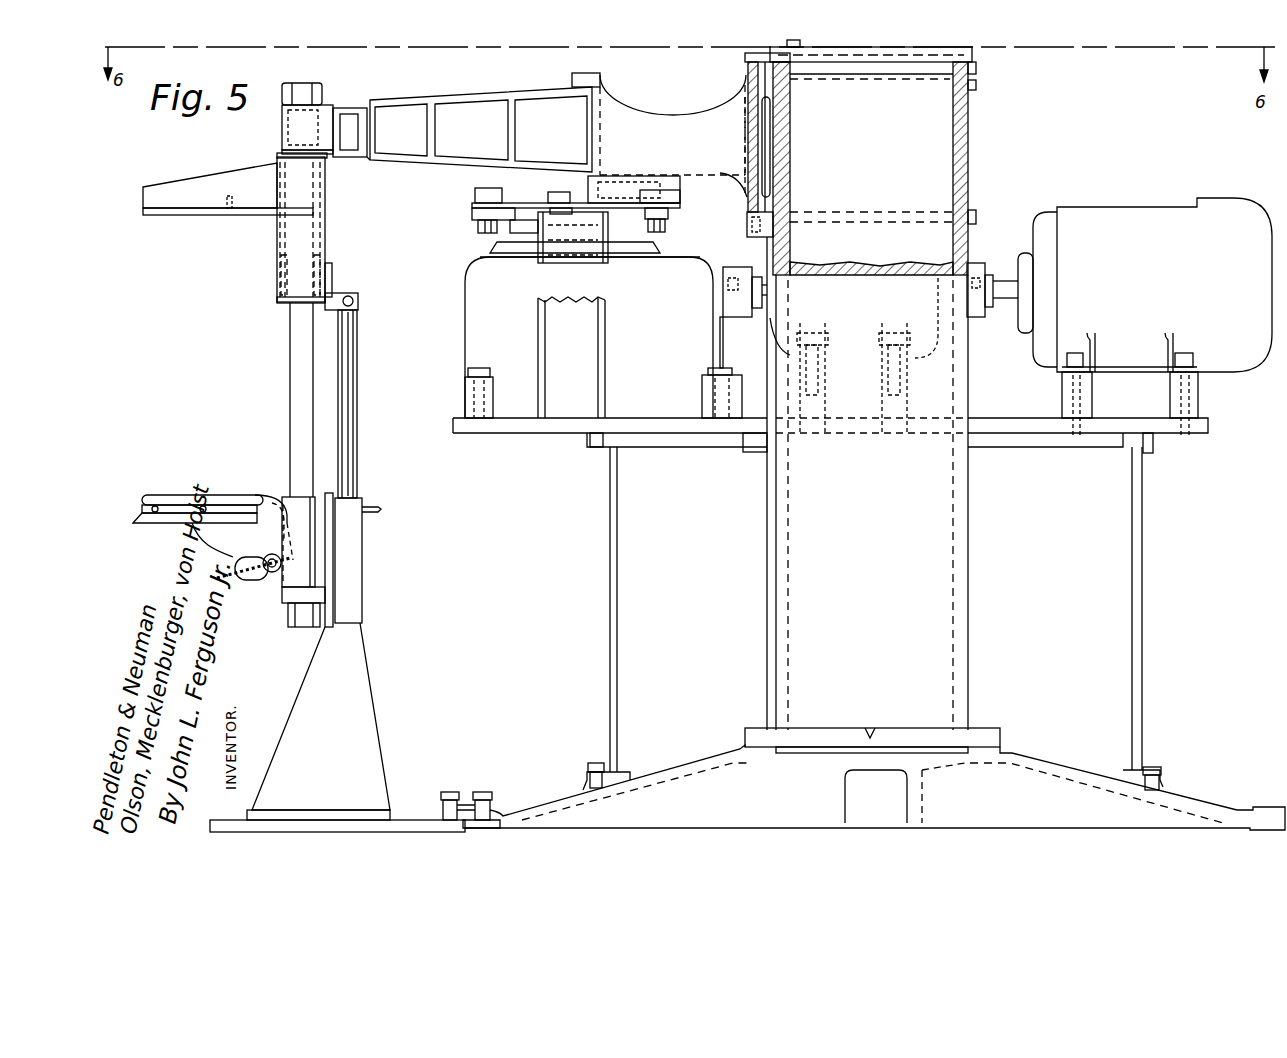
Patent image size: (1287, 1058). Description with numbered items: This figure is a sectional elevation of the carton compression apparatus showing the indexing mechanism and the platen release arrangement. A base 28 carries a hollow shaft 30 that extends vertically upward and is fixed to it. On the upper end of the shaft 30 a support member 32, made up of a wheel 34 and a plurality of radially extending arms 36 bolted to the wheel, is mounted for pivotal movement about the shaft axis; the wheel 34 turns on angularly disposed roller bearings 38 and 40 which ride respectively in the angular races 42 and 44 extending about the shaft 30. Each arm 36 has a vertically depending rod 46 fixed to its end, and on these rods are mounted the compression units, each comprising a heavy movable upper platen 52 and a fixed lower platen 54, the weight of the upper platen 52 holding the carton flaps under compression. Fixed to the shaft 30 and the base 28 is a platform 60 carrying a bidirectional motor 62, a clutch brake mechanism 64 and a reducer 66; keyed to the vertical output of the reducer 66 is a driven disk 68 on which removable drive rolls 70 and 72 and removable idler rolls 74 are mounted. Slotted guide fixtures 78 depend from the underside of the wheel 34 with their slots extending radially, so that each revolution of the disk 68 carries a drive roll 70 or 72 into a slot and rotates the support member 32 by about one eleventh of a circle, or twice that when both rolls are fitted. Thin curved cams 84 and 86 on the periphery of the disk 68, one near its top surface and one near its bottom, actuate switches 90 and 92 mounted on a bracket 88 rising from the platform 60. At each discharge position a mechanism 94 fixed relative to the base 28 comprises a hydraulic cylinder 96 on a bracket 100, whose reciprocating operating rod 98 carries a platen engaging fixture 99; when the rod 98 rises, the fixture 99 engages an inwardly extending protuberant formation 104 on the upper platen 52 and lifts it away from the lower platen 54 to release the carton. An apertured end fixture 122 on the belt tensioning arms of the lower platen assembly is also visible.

The base 28 is at (1185, 800).
The hollow shaft 30 is at (960, 620).
The support member 32 is at (502, 90).
The wheel 34 is at (647, 118).
The arm 36 is at (407, 162).
The roller bearing 38 is at (788, 112).
The roller bearing 40 is at (790, 187).
The roller bearing race 42 is at (790, 77).
The roller bearing race 44 is at (790, 212).
The rod 46 is at (295, 373).
The upper platen 52 is at (188, 200).
The lower platen 54 is at (193, 487).
The platform 60 is at (1190, 435).
The motor 62 is at (1142, 296).
The clutch brake mechanism 64 is at (768, 323).
The reducer 66 is at (670, 393).
The driven disk 68 is at (485, 210).
The drive roll 70 is at (482, 192).
The drive roll 72 is at (680, 206).
The idler roll 74 is at (560, 197).
The slotted guide fixture 78 is at (620, 193).
The cam 84 is at (640, 214).
The cam 86 is at (667, 213).
The bracket 88 is at (563, 400).
The switch 90 is at (552, 205).
The switch 92 is at (578, 258).
The platen raising mechanism 94 is at (362, 395).
The hydraulic cylinder 96 is at (352, 568).
The operating rod 98 is at (349, 427).
The platen engaging fixture 99 is at (340, 312).
The bracket 100 is at (360, 702).
The protuberant formation 104 is at (333, 293).
The apertured end fixture 122 is at (272, 575).